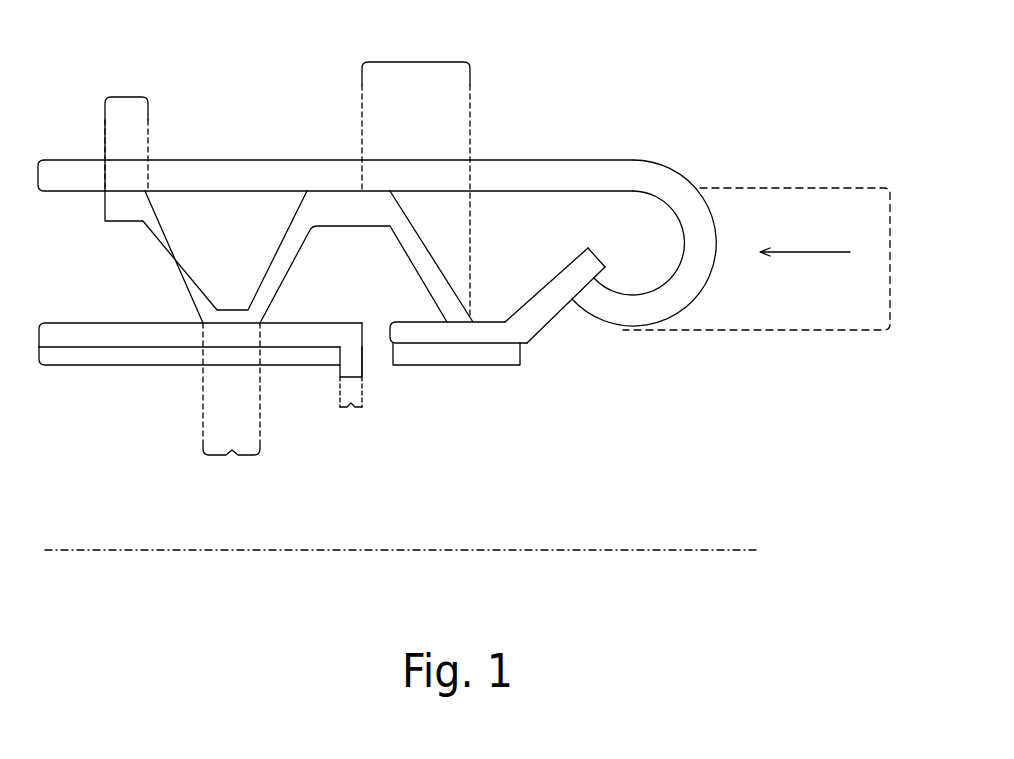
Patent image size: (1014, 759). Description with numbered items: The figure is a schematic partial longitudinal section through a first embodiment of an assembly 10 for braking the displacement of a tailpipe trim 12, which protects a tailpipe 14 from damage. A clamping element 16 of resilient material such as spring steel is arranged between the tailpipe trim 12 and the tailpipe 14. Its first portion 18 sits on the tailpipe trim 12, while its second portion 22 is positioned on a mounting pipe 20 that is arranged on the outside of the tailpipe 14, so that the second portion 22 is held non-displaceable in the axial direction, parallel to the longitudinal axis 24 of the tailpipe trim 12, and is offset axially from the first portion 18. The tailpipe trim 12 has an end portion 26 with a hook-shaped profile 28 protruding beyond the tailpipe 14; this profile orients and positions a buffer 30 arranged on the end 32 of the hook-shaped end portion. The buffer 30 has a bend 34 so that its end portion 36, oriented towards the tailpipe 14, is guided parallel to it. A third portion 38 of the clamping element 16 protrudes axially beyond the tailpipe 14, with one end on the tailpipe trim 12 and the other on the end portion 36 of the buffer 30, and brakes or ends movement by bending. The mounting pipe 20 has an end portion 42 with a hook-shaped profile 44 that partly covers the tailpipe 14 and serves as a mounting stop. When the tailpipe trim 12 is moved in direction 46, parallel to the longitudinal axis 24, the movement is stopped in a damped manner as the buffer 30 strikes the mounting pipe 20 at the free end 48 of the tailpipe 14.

The assembly 10 is at (700, 77).
The tailpipe trim 12 is at (570, 173).
The tailpipe 14 is at (57, 358).
The clamping element 16 is at (173, 249).
The first portion 18 is at (128, 97).
The mounting pipe 20 is at (262, 322).
The second portion 22 is at (232, 455).
The longitudinal axis 24 is at (680, 548).
The end portion 26 is at (890, 251).
The hook-shaped profile 28 is at (714, 248).
The buffer 30 is at (490, 332).
The end 32 is at (608, 265).
The bend 34 is at (527, 343).
The end portion 36 is at (502, 365).
The third portion 38 is at (415, 62).
The end portion 42 is at (351, 407).
The hook-shaped profile 44 is at (356, 323).
The direction 46 is at (800, 252).
The free end 48 is at (363, 362).